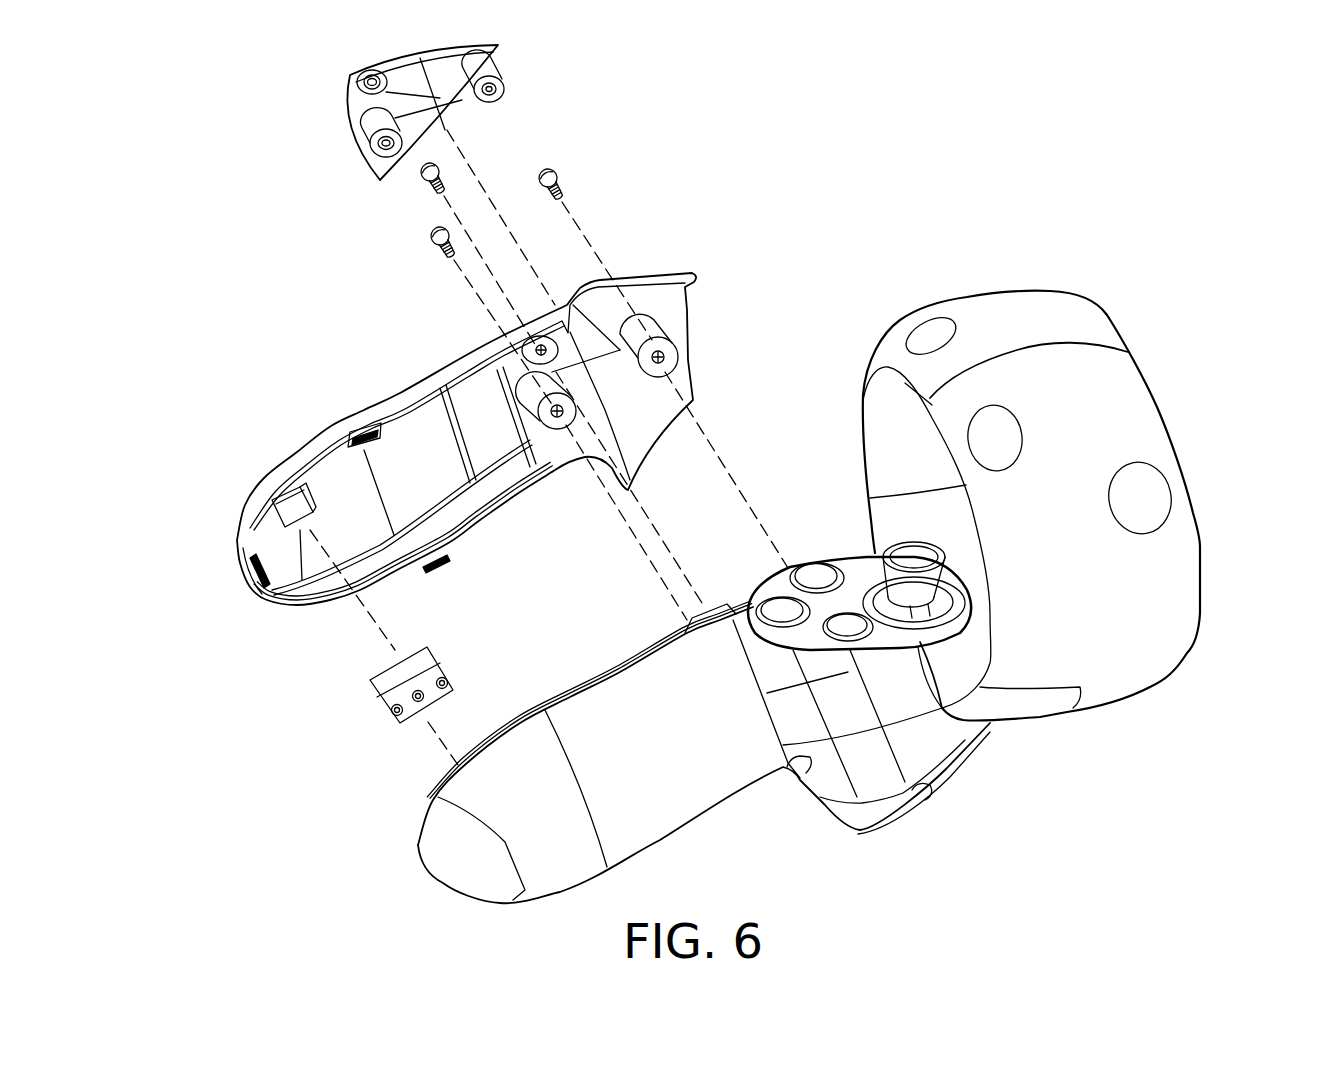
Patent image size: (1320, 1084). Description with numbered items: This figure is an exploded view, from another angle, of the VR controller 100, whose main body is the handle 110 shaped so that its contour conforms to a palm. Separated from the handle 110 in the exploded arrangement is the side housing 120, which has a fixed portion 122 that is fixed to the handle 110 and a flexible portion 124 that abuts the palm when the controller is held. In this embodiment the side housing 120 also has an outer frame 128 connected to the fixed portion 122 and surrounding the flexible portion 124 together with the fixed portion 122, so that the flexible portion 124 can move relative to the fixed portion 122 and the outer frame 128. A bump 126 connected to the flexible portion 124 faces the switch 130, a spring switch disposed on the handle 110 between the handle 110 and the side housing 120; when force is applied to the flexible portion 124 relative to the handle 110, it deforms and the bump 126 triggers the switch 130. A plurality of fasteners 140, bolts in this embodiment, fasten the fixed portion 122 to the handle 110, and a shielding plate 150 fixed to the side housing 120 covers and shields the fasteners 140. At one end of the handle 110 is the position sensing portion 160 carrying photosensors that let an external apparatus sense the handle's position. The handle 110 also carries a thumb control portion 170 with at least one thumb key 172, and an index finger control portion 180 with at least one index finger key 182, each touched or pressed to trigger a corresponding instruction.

The VR controller 100 is at (700, 488).
The handle 110 is at (684, 797).
The side housing 120 is at (446, 450).
The fixed portion 122 is at (662, 298).
The flexible portion 124 is at (415, 437).
The bump 126 is at (268, 500).
The outer frame 128 is at (287, 592).
The switch 130 is at (372, 683).
The fastener 140 is at (562, 192).
The shielding plate 150 is at (367, 108).
The position sensing portion 160 is at (1132, 414).
The thumb control portion 170 is at (859, 558).
The thumb key 172 is at (843, 556).
The index finger control portion 180 is at (906, 832).
The index finger key 182 is at (862, 815).